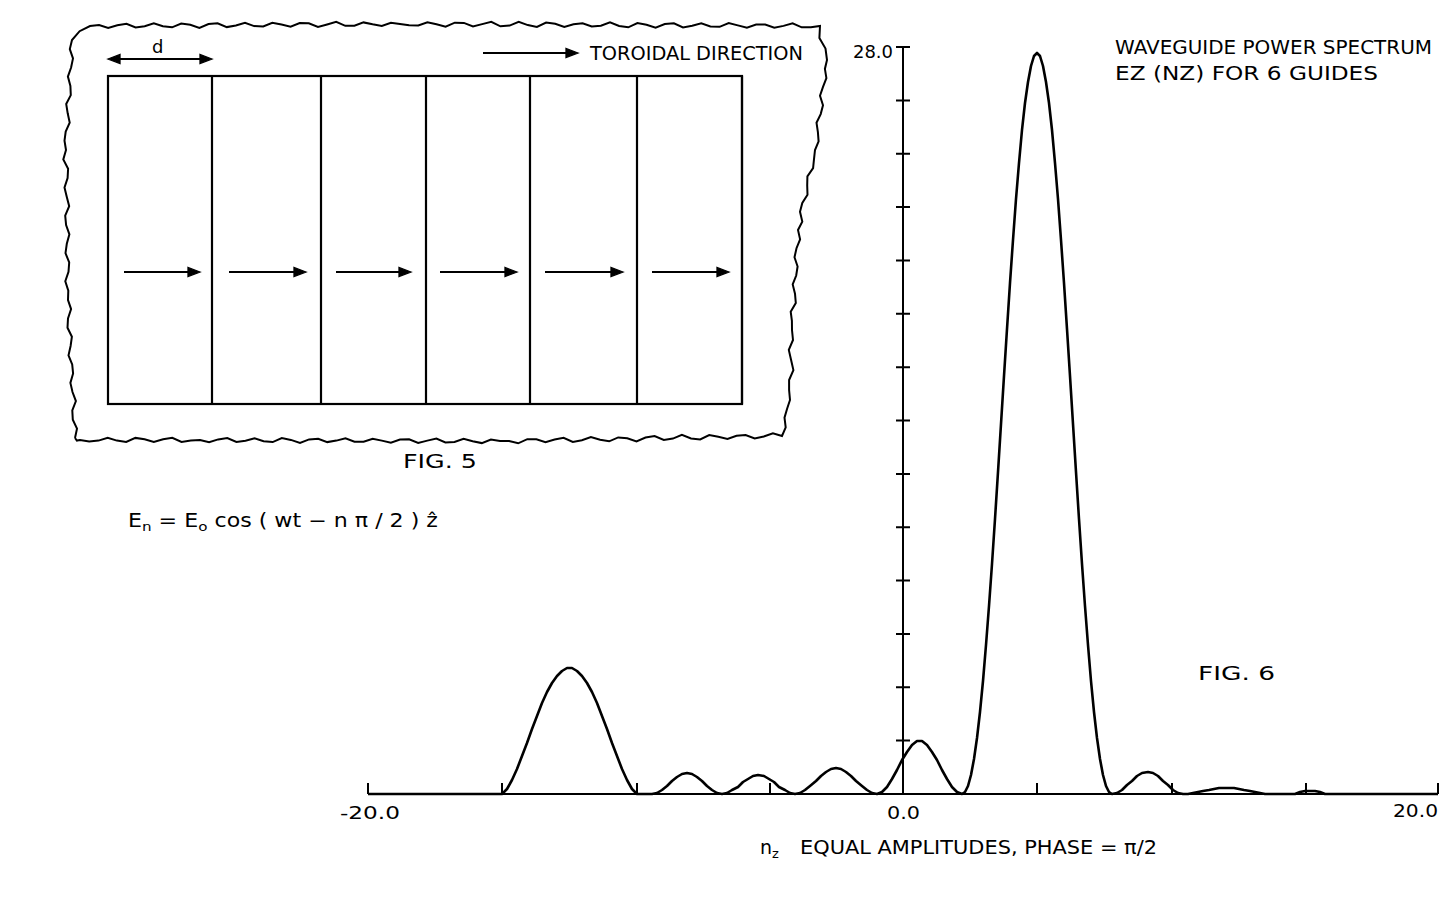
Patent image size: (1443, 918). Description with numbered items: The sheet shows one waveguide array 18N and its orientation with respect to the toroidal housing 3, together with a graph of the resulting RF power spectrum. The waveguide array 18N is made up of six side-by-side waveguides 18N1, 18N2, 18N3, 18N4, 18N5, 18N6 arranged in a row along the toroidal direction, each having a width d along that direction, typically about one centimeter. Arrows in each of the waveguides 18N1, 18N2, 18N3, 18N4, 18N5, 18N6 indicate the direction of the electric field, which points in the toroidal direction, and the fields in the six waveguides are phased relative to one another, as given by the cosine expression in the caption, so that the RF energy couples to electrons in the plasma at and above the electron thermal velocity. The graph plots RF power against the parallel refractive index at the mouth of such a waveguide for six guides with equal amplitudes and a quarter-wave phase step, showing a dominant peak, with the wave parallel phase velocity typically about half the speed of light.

The toroidal housing 3 is at (786, 411).
The waveguide array 18N is at (742, 101).
The waveguide 18N1 is at (168, 136).
The waveguide 18N2 is at (274, 136).
The waveguide 18N3 is at (380, 136).
The waveguide 18N4 is at (483, 136).
The waveguide 18N5 is at (590, 136).
The waveguide 18N6 is at (697, 136).